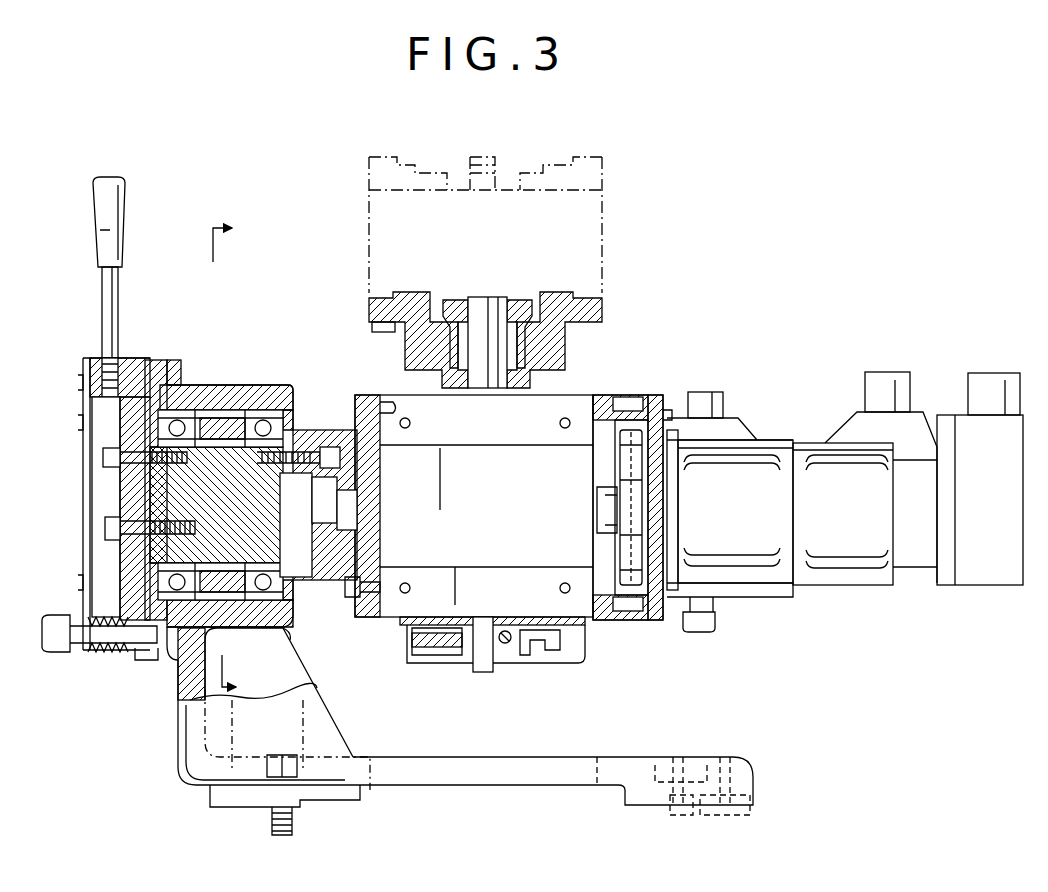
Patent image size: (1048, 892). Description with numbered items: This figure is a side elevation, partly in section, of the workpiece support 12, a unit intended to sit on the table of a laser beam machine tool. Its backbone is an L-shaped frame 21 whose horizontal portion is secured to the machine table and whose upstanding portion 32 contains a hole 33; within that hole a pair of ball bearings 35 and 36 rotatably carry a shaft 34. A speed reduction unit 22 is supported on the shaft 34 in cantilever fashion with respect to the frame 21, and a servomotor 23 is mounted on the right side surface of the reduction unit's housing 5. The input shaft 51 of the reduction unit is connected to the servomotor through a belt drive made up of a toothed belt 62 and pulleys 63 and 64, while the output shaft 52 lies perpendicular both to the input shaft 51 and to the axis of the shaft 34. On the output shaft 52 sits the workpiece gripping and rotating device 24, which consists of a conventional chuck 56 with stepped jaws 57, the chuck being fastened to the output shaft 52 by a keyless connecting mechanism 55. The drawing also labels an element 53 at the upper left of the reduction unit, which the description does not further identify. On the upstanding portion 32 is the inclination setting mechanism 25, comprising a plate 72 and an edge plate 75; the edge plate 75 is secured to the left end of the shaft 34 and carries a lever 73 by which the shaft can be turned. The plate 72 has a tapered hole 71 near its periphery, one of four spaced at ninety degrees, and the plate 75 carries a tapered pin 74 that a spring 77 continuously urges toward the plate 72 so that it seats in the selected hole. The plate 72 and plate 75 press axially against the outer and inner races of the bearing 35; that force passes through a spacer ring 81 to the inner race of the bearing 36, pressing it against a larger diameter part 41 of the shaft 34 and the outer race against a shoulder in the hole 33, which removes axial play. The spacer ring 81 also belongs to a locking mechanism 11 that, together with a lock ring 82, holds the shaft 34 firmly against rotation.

The housing 5 is at (239, 460).
The locking mechanism 11 is at (244, 575).
The workpiece support 12 is at (676, 240).
The frame 21 is at (195, 786).
The speed reduction unit 22 is at (564, 393).
The servomotor 23 is at (773, 439).
The workpiece gripping and rotating device 24 is at (355, 323).
The inclination setting mechanism 25 is at (144, 353).
The upstanding portion 32 is at (314, 698).
The hole 33 is at (240, 422).
The shaft 34 is at (221, 586).
The ball bearing 35 is at (190, 410).
The ball bearing 36 is at (291, 390).
The larger diameter part 41 is at (318, 531).
The input shaft 51 is at (597, 512).
The output shaft 52 is at (486, 297).
The cover plate 53 is at (393, 398).
The keyless connecting mechanism 55 is at (441, 299).
The chuck 56 is at (607, 206).
The stepped jaws 57 is at (492, 162).
The toothed belt 62 is at (625, 420).
The pulley 63 is at (622, 567).
The pulley 64 is at (622, 447).
The hole 71 is at (140, 650).
The plate 72 is at (174, 364).
The lever 73 is at (124, 170).
The pin 74 is at (78, 643).
The edge plate 75 is at (92, 356).
The spring 77 is at (105, 653).
The spacer ring 81 is at (218, 418).
The lock ring 82 is at (229, 412).